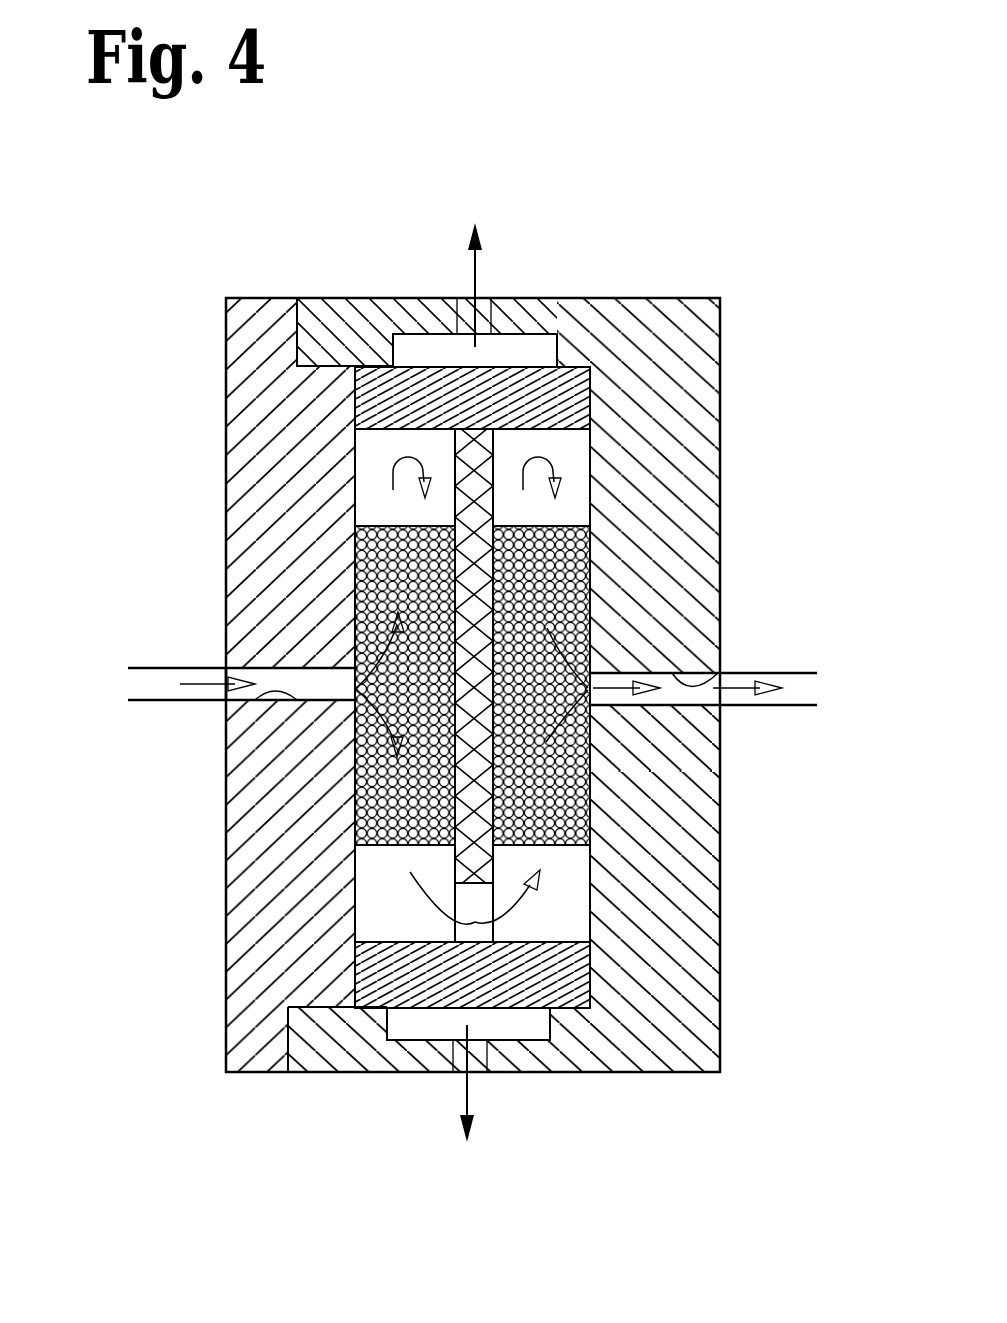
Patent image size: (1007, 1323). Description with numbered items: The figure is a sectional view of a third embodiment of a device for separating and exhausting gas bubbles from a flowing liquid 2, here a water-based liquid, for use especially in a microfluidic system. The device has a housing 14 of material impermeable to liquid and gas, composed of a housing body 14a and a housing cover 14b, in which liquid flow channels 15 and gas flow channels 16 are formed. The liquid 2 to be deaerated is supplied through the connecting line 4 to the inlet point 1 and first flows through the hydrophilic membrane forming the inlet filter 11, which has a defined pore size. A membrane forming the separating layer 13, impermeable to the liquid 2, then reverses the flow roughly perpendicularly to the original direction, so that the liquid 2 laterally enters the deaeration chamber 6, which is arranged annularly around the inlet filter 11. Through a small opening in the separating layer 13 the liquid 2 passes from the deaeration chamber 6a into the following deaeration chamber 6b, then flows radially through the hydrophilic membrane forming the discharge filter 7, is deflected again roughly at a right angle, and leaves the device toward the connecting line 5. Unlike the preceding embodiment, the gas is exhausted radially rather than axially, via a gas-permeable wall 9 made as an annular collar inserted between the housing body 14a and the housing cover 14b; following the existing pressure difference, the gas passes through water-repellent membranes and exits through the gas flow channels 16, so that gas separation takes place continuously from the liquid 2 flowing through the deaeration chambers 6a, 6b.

The inlet point 1 is at (337, 688).
The liquid 2 is at (205, 686).
The connecting line 4 is at (165, 700).
The connecting line 5 is at (785, 704).
The deaeration chamber 6 is at (388, 455).
The deaeration chamber 6a is at (383, 918).
The deaeration chamber 6b is at (533, 925).
The discharge filter 7 is at (588, 541).
The gas-permeable wall 9 is at (522, 397).
The inlet filter 11 is at (392, 562).
The separating layer 13 is at (492, 778).
The housing 14 is at (642, 178).
The housing body 14a is at (258, 327).
The housing cover 14b is at (676, 330).
The liquid flow channels 15 is at (262, 698).
The gas flow channels 16 is at (482, 307).